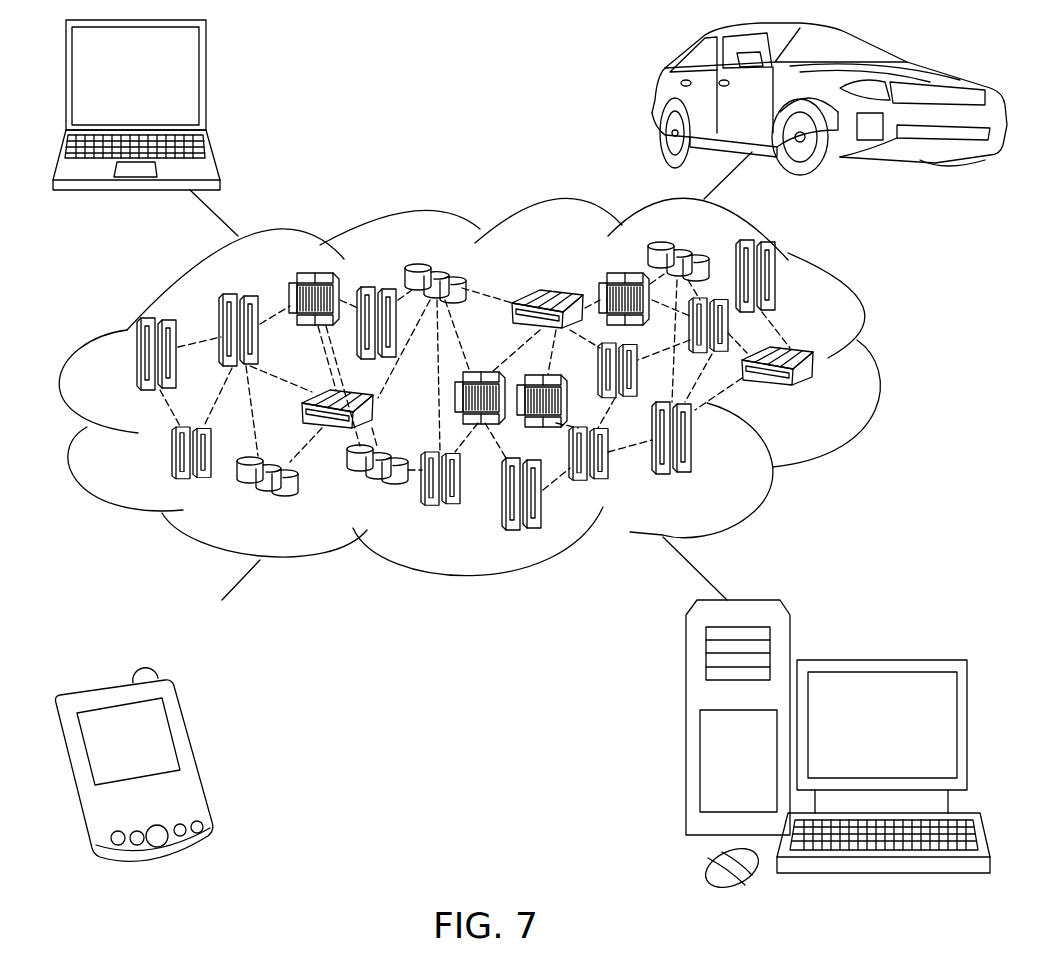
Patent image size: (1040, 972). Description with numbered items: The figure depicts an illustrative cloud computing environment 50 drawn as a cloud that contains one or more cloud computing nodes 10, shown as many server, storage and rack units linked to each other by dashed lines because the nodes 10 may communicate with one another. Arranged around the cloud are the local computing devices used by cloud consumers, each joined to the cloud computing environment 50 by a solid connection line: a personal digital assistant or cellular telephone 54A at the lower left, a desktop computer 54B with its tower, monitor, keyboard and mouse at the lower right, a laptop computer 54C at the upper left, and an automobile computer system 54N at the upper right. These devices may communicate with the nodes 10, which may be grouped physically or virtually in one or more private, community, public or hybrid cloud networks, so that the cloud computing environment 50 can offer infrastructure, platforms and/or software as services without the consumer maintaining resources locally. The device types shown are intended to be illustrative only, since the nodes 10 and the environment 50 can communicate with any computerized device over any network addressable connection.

The cloud computing node 10 is at (822, 393).
The cloud computing environment 50 is at (882, 362).
The personal digital assistant or cellular telephone 54A is at (195, 755).
The desktop computer 54B is at (880, 658).
The laptop computer 54C is at (206, 82).
The automobile computer system 54N is at (655, 98).